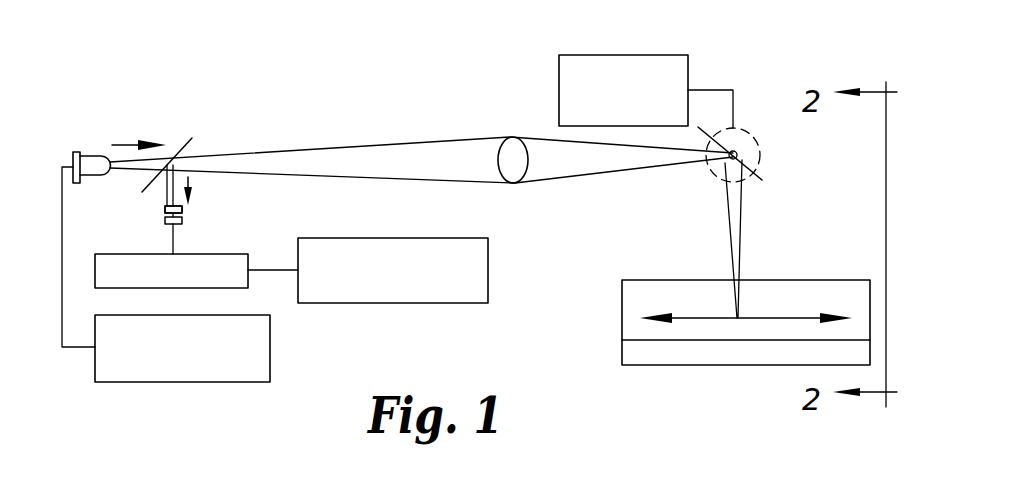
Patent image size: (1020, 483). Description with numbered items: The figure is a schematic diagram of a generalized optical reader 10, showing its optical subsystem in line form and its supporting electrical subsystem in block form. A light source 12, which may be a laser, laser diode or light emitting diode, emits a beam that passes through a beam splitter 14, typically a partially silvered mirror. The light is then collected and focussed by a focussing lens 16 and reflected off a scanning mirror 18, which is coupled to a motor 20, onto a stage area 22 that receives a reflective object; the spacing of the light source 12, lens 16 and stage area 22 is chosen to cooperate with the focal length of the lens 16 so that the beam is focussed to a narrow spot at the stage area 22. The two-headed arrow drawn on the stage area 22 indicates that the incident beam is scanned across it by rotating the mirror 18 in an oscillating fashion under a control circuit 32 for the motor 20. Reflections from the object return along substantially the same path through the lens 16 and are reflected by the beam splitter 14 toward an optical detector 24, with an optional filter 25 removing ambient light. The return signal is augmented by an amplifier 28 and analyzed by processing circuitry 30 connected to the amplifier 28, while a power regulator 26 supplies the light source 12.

The optical reader 10 is at (346, 108).
The light source 12 is at (98, 152).
The beam splitter 14 is at (192, 138).
The focussing lens 16 is at (500, 140).
The scanning mirror 18 is at (753, 173).
The motor 20 is at (760, 145).
The stage area 22 is at (650, 287).
The optical detector 24 is at (182, 220).
The filter 25 is at (165, 208).
The power regulator 26 is at (173, 382).
The amplifier 28 is at (113, 254).
The processing circuitry 30 is at (417, 303).
The control circuit 32 is at (668, 55).